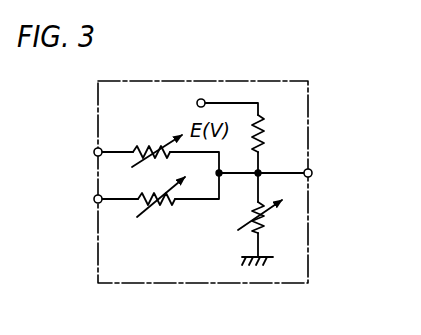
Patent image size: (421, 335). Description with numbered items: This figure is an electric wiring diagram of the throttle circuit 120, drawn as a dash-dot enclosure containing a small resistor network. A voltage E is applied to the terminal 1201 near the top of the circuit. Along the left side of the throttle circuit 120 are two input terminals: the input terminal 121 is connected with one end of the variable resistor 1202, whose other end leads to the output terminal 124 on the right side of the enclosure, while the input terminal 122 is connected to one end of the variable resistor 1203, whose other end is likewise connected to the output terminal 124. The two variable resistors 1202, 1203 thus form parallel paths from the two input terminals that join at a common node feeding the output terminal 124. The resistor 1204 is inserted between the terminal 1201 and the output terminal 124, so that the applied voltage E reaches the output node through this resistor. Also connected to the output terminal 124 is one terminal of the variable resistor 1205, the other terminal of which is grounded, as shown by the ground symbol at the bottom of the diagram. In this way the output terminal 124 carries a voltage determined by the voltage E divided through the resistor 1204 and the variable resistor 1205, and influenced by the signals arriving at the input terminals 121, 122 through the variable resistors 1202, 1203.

The throttle circuit 120 is at (215, 284).
The input terminal 121 is at (93, 152).
The input terminal 122 is at (94, 201).
The output terminal 124 is at (311, 169).
The terminal 1201 is at (203, 99).
The variable resistor 1202 is at (138, 147).
The variable resistor 1203 is at (163, 208).
The resistor 1204 is at (265, 130).
The variable resistor 1205 is at (264, 220).